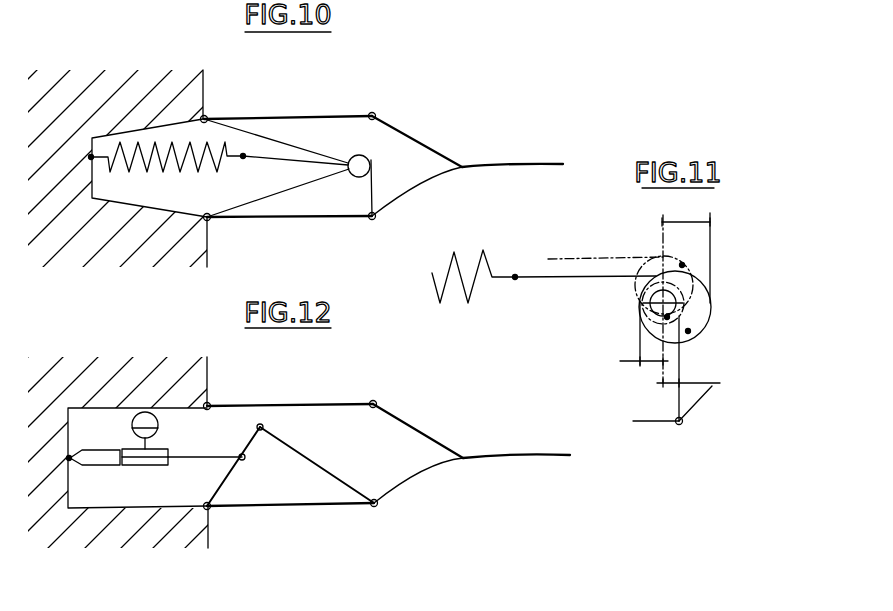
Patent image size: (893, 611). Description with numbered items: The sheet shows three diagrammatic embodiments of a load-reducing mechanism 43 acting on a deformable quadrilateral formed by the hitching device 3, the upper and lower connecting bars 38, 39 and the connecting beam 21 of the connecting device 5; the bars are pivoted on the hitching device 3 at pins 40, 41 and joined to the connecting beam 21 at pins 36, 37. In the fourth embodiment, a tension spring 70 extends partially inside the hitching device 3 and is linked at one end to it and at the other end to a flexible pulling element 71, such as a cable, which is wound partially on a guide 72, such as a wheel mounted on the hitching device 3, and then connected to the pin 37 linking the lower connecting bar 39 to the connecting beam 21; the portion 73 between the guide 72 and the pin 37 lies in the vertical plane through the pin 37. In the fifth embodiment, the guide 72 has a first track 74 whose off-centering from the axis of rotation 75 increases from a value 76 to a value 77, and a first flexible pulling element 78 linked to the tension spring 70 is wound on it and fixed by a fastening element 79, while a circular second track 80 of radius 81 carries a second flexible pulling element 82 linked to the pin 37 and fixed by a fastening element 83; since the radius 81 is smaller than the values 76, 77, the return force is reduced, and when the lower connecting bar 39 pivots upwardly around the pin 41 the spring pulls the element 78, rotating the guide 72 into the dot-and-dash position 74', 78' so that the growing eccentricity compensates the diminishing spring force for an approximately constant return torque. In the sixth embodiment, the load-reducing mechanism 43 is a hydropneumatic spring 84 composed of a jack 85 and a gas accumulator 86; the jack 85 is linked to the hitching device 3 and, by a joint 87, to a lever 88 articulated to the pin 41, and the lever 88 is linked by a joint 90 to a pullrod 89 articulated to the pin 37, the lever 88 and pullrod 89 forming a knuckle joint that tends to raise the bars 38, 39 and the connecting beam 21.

In FIG. 10, the hitching device 3 is at (69, 84).
In FIG. 12, the hitching device 3 is at (77, 363).
In FIG. 10, the connecting device 5 is at (545, 146).
In FIG. 12, the connecting device 5 is at (501, 436).
In FIG. 10, the connecting beam 21 is at (473, 169).
In FIG. 11, the connecting beam 21 is at (697, 405).
In FIG. 12, the connecting beam 21 is at (480, 459).
In FIG. 10, the pivot joint 36 is at (376, 112).
In FIG. 12, the pivot joint 36 is at (378, 398).
In FIG. 10, the pin 37 is at (374, 221).
In FIG. 11, the pin 37 is at (685, 423).
In FIG. 12, the pin 37 is at (378, 508).
In FIG. 10, the upper connecting bar 38 is at (306, 114).
In FIG. 12, the upper connecting bar 38 is at (298, 402).
In FIG. 10, the lower connecting bar 39 is at (310, 220).
In FIG. 11, the lower connecting bar 39 is at (643, 423).
In FIG. 12, the lower connecting bar 39 is at (312, 507).
In FIG. 10, the pivot joint 40 is at (209, 115).
In FIG. 12, the pivot joint 40 is at (213, 398).
In FIG. 10, the pin 41 is at (212, 223).
In FIG. 12, the pin 41 is at (213, 512).
In FIG. 10, the load-reducing mechanism 43 is at (130, 188).
In FIG. 12, the load-reducing mechanism 43 is at (105, 430).
In FIG. 10, the tension spring 70 is at (163, 172).
In FIG. 11, the tension spring 70 is at (432, 275).
In FIG. 10, the flexible pulling element 71 is at (352, 160).
In FIG. 10, the guide 72 is at (368, 161).
In FIG. 11, the guide 72 is at (583, 320).
In FIG. 10, the portion of the flexible pulling element 73 is at (373, 188).
In FIG. 11, the first track 74 is at (709, 297).
In FIG. 11, the first track in rotated position 74' is at (653, 264).
In FIG. 11, the axis of rotation 75 is at (650, 303).
In FIG. 11, the value 76 is at (652, 365).
In FIG. 11, the value 77 is at (687, 222).
In FIG. 11, the first flexible pulling element 78 is at (585, 250).
In FIG. 11, the first flexible pulling element in rotated position 78' is at (605, 228).
In FIG. 11, the fastening element 79 is at (690, 331).
In FIG. 11, the second track 80 is at (643, 318).
In FIG. 11, the radius 81 is at (712, 388).
In FIG. 11, the second flexible pulling element 82 is at (678, 395).
In FIG. 11, the fastening element 83 is at (688, 333).
In FIG. 12, the hydropneumatic spring 84 is at (145, 480).
In FIG. 12, the jack 85 is at (95, 467).
In FIG. 12, the gas accumulator 86 is at (146, 411).
In FIG. 12, the joint 87 is at (247, 460).
In FIG. 12, the lever 88 is at (224, 482).
In FIG. 12, the pullrod 89 is at (348, 482).
In FIG. 12, the joint 90 is at (265, 426).